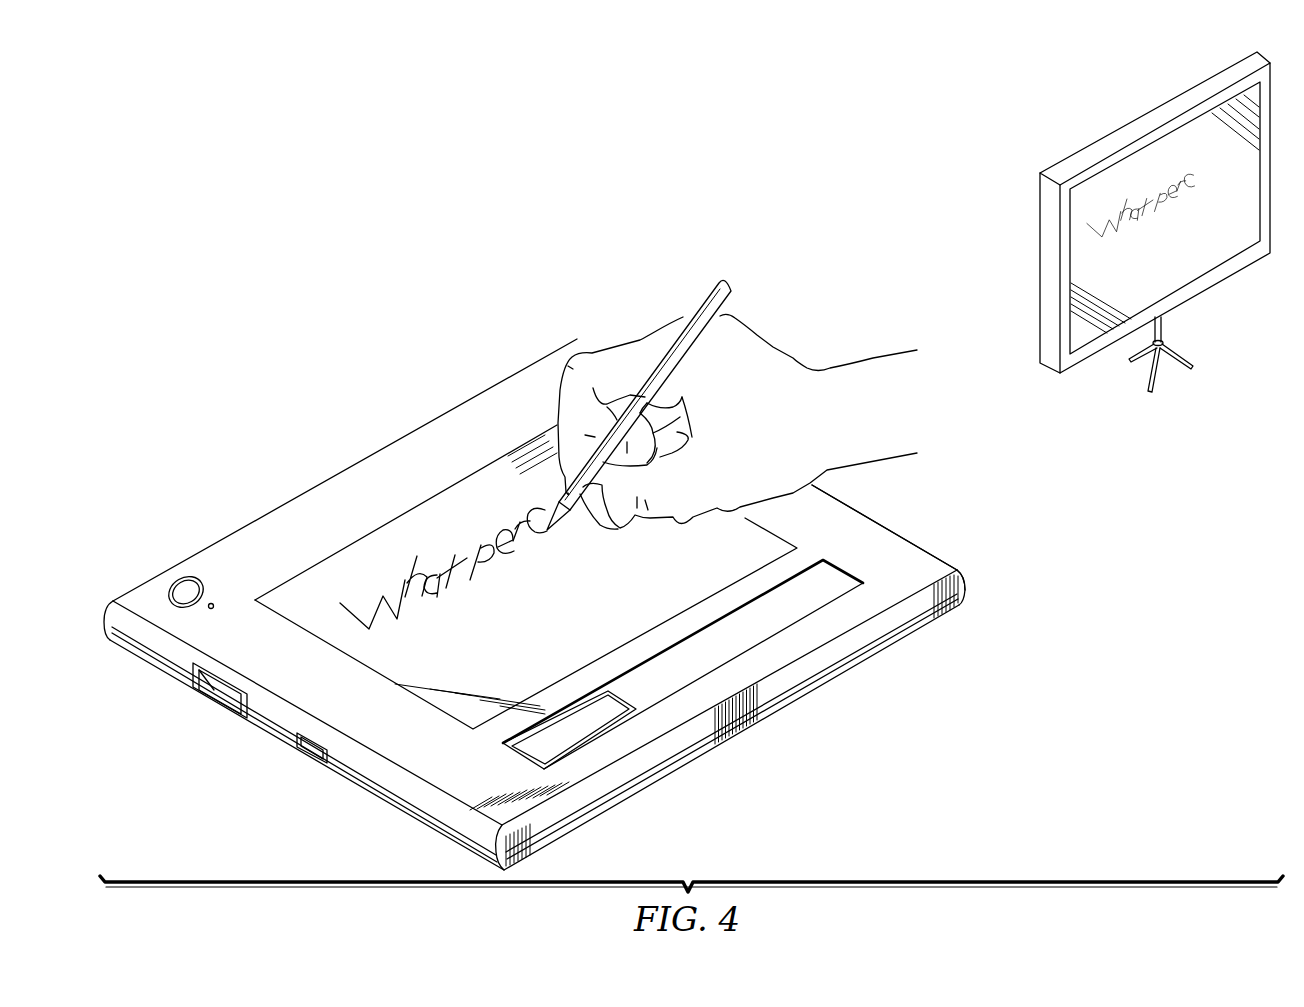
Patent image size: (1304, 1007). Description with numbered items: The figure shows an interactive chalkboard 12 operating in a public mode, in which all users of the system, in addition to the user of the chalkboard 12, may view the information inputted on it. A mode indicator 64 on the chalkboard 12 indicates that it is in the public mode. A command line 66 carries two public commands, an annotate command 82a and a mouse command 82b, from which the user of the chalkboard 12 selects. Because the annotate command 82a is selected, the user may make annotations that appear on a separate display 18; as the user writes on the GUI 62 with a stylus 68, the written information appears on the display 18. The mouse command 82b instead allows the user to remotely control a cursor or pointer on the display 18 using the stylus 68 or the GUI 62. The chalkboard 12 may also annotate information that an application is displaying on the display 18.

The interactive chalkboard 12 is at (386, 417).
The display 18 is at (1147, 121).
The GUI 62 is at (437, 507).
The mode indicator 64 is at (822, 568).
The command line 66 is at (871, 558).
The stylus 68 is at (710, 290).
The annotate command 82a is at (540, 744).
The mouse command 82b is at (690, 650).